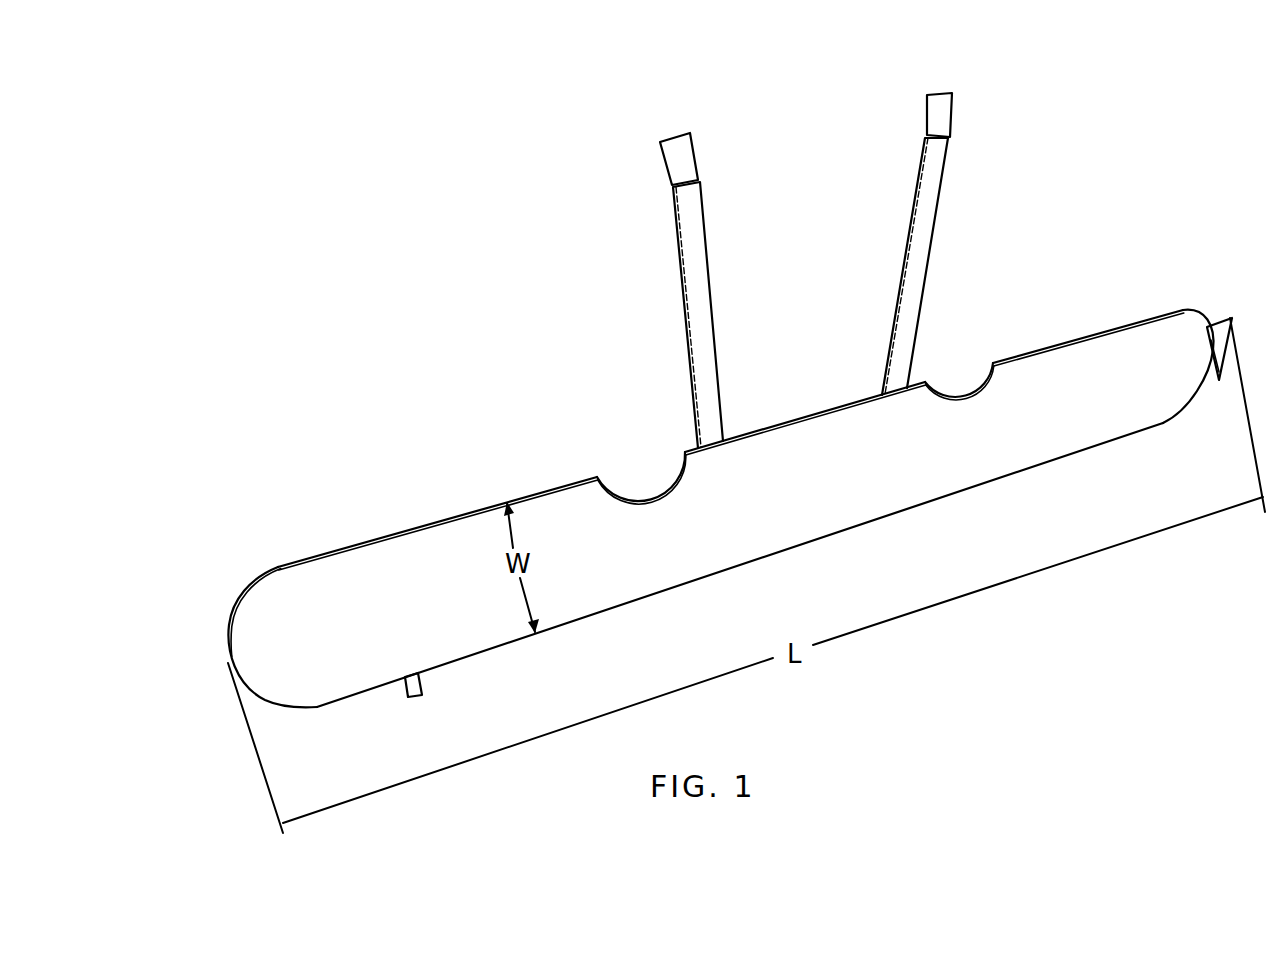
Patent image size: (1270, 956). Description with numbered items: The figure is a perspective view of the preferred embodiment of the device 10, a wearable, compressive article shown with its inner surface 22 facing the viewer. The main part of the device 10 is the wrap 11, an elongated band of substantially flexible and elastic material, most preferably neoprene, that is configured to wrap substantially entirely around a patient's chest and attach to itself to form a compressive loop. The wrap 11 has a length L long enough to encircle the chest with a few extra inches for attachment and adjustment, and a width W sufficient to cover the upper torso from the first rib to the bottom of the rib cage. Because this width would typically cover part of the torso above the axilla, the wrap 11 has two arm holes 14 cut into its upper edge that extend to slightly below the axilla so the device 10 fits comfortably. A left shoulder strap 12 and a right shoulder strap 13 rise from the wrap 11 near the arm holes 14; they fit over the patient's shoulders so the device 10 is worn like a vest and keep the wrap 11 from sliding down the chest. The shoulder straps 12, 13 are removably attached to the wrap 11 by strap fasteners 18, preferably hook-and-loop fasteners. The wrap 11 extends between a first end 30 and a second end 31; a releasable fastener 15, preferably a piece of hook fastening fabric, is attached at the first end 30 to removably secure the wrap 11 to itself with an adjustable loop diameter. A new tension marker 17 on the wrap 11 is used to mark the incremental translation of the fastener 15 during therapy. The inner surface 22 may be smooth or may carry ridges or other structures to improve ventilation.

The device 10 is at (416, 126).
The wrap 11 is at (443, 512).
The left shoulder strap 12 is at (928, 280).
The right shoulder strap 13 is at (680, 312).
The arm holes 14 is at (640, 464).
The fastener 15 is at (1230, 318).
The new tension marker 17 is at (417, 698).
The strap fasteners 18 is at (695, 157).
The inner surface 22 is at (793, 511).
The first end 30 is at (1212, 368).
The second end 31 is at (228, 653).